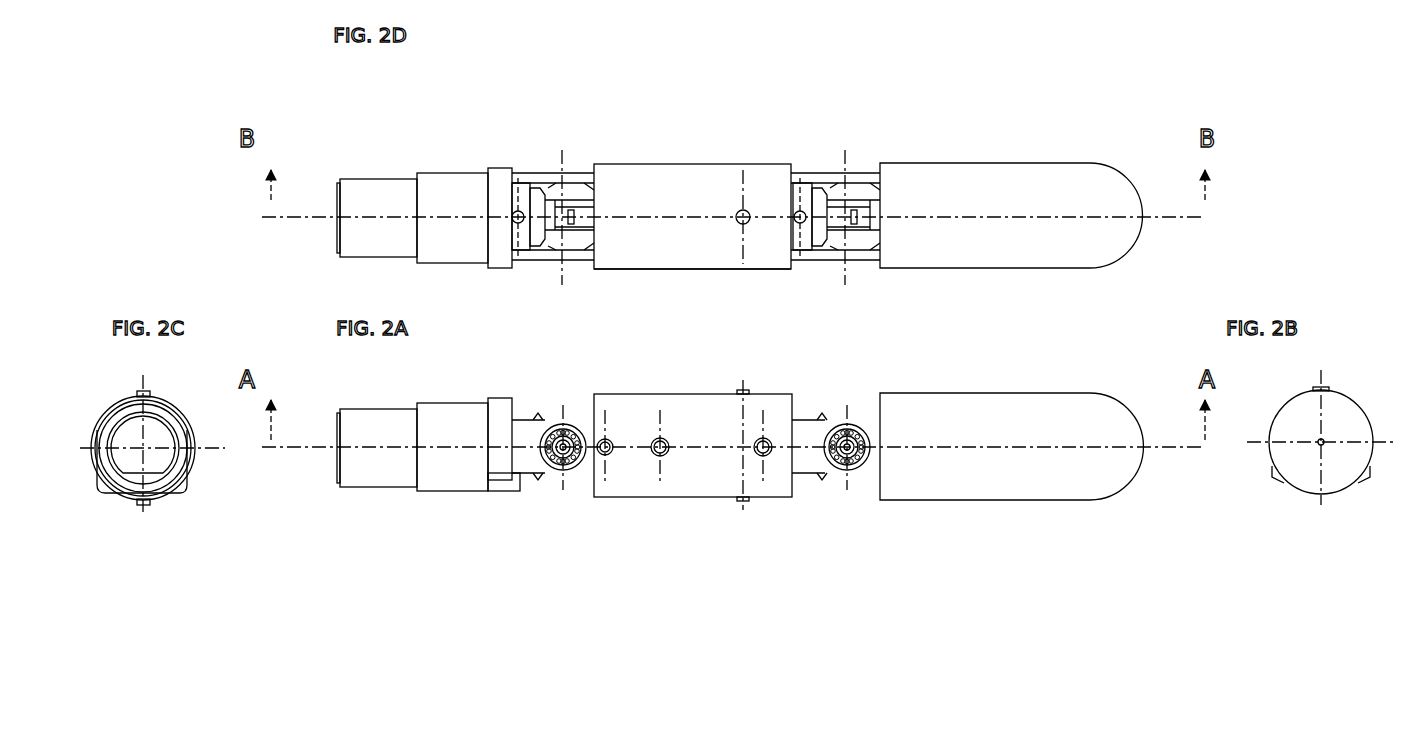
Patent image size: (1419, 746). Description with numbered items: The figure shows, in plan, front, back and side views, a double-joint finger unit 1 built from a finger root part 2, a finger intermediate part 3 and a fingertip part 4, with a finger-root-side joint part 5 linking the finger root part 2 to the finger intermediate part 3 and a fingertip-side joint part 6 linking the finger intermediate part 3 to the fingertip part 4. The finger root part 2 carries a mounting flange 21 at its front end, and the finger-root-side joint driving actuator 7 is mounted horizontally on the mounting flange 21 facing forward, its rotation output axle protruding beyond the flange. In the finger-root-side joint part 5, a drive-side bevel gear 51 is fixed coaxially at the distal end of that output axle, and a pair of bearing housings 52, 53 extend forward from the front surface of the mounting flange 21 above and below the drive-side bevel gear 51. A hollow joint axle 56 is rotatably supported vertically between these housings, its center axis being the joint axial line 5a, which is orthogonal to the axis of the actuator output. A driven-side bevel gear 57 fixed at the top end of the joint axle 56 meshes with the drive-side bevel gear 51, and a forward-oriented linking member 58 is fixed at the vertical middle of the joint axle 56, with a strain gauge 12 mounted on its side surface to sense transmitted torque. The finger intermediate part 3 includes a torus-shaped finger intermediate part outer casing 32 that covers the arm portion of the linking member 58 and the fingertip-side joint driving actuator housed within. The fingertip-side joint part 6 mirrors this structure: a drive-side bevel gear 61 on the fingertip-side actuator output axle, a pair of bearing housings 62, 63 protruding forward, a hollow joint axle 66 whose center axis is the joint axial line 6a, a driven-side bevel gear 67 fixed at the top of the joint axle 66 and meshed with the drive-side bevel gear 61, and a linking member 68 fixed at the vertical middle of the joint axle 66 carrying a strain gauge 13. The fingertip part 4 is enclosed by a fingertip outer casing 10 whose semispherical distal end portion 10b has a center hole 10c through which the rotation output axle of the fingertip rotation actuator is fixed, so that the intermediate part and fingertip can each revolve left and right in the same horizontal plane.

In FIG. 2D, the double-joint finger unit 1 is at (970, 106).
In FIG. 2A, the double-joint finger unit 1 is at (427, 622).
In FIG. 2D, the finger root part 2 is at (451, 166).
In FIG. 2A, the finger root part 2 is at (447, 508).
In FIG. 2D, the finger intermediate part 3 is at (720, 160).
In FIG. 2A, the finger intermediate part 3 is at (703, 506).
In FIG. 2D, the fingertip part 4 is at (1043, 158).
In FIG. 2A, the fingertip part 4 is at (985, 506).
In FIG. 2D, the finger-root-side joint part 5 is at (554, 157).
In FIG. 2A, the finger-root-side joint part 5 is at (562, 506).
In FIG. 2D, the joint axial line 5a is at (566, 178).
In FIG. 2D, the fingertip-side joint part 6 is at (852, 150).
In FIG. 2A, the fingertip-side joint part 6 is at (848, 506).
In FIG. 2D, the joint axial line 6a is at (842, 174).
In FIG. 2C, the finger-root-side joint driving actuator 7 is at (160, 462).
In FIG. 2D, the fingertip outer casing 10 is at (1008, 270).
In FIG. 2A, the fingertip outer casing 10 is at (1060, 481).
In FIG. 2B, the semispherical distal end portion 10b is at (1307, 475).
In FIG. 2B, the center hole 10c is at (1323, 446).
In FIG. 2D, the strain gauge 12 is at (574, 210).
In FIG. 2D, the strain gauge 13 is at (857, 212).
In FIG. 2D, the mounting flange 21 is at (502, 254).
In FIG. 2A, the mounting flange 21 is at (500, 412).
In FIG. 2C, the mounting flange 21 is at (183, 475).
In FIG. 2D, the finger intermediate part outer casing 32 is at (705, 270).
In FIG. 2D, the drive-side bevel gear 51 is at (538, 246).
In FIG. 2D, the bearing housing 52 is at (520, 182).
In FIG. 2D, the bearing housing 53 is at (518, 258).
In FIG. 2D, the hollow joint axle 56 is at (569, 252).
In FIG. 2D, the driven-side bevel gear 57 is at (548, 182).
In FIG. 2D, the linking member 58 is at (572, 242).
In FIG. 2D, the drive-side bevel gear 61 is at (815, 258).
In FIG. 2D, the bearing housing 62 is at (862, 180).
In FIG. 2D, the bearing housing 63 is at (852, 242).
In FIG. 2D, the hollow joint axle 66 is at (835, 250).
In FIG. 2D, the driven-side bevel gear 67 is at (830, 180).
In FIG. 2D, the linking member 68 is at (860, 242).